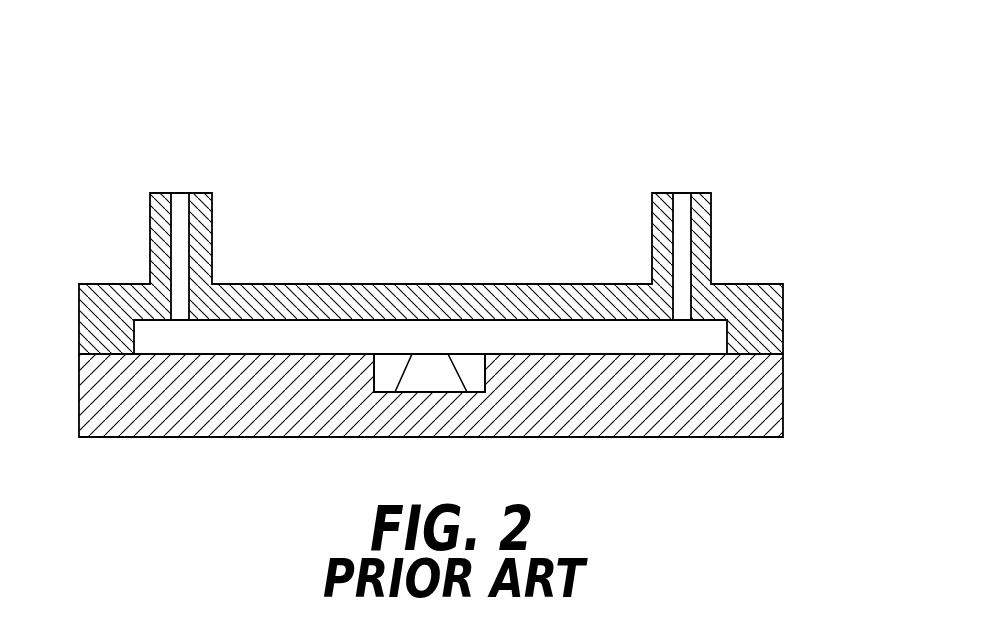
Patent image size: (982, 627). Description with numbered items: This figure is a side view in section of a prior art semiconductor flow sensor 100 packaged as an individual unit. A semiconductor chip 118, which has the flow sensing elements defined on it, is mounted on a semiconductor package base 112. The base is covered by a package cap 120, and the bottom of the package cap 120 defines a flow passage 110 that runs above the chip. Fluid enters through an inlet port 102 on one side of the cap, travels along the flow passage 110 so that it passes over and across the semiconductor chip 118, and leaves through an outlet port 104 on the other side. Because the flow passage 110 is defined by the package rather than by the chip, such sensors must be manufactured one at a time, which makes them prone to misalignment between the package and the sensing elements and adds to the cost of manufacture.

The semiconductor flow sensor 100 is at (438, 258).
The inlet port 102 is at (181, 185).
The outlet port 104 is at (685, 180).
The flow passage 110 is at (335, 342).
The semiconductor package base 112 is at (733, 426).
The semiconductor chip 118 is at (470, 365).
The package cap 120 is at (755, 283).